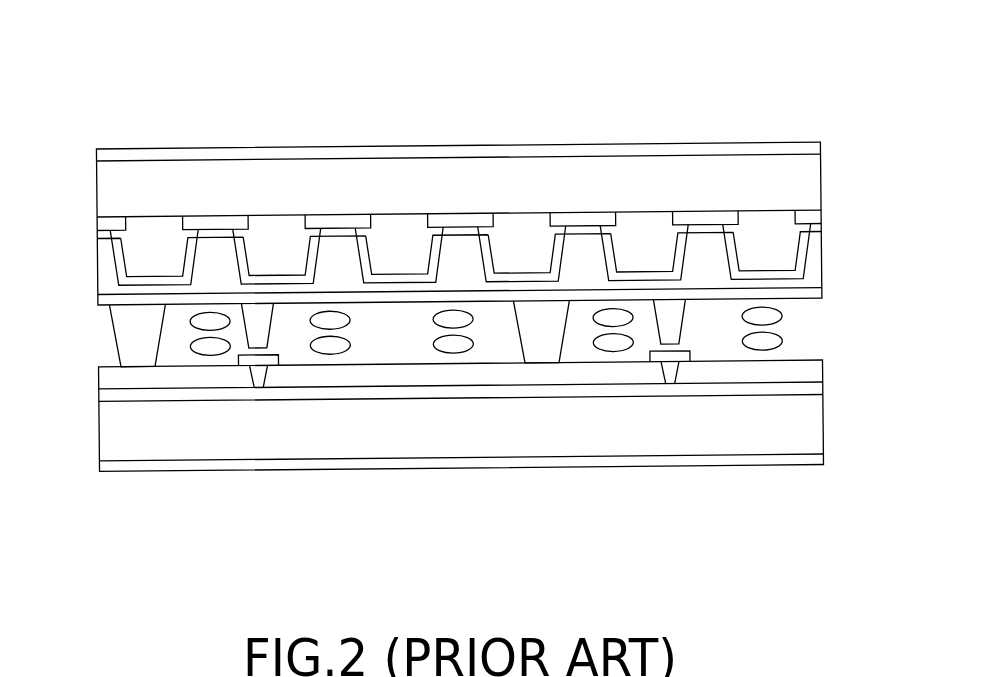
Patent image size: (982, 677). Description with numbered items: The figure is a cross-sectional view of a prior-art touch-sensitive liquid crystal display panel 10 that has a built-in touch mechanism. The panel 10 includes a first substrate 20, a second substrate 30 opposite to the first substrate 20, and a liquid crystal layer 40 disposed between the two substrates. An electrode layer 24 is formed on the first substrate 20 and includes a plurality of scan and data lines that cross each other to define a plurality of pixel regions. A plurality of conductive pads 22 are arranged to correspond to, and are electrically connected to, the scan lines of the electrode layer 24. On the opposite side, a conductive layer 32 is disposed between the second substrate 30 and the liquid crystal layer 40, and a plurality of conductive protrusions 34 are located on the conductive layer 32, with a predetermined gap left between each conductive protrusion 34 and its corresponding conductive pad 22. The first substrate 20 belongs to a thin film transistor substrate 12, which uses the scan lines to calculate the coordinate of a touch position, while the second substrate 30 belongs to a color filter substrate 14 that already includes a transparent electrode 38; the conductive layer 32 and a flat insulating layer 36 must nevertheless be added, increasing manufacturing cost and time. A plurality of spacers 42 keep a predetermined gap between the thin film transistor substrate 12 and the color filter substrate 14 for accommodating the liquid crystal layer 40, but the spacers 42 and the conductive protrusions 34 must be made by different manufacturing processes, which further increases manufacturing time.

The touch-sensitive liquid crystal display panel 10 is at (187, 83).
The thin film transistor substrate 12 is at (90, 368).
The color filter substrate 14 is at (88, 148).
The first substrate 20 is at (812, 425).
The conductive pads 22 is at (670, 369).
The electrode layer 24 is at (810, 389).
The second substrate 30 is at (807, 183).
The conductive layer 32 is at (813, 293).
The conductive protrusions 34 is at (672, 317).
The flat insulating layer 36 is at (807, 247).
The transparent electrode 38 is at (813, 230).
The liquid crystal layer 40 is at (792, 305).
The spacers 42 is at (547, 343).